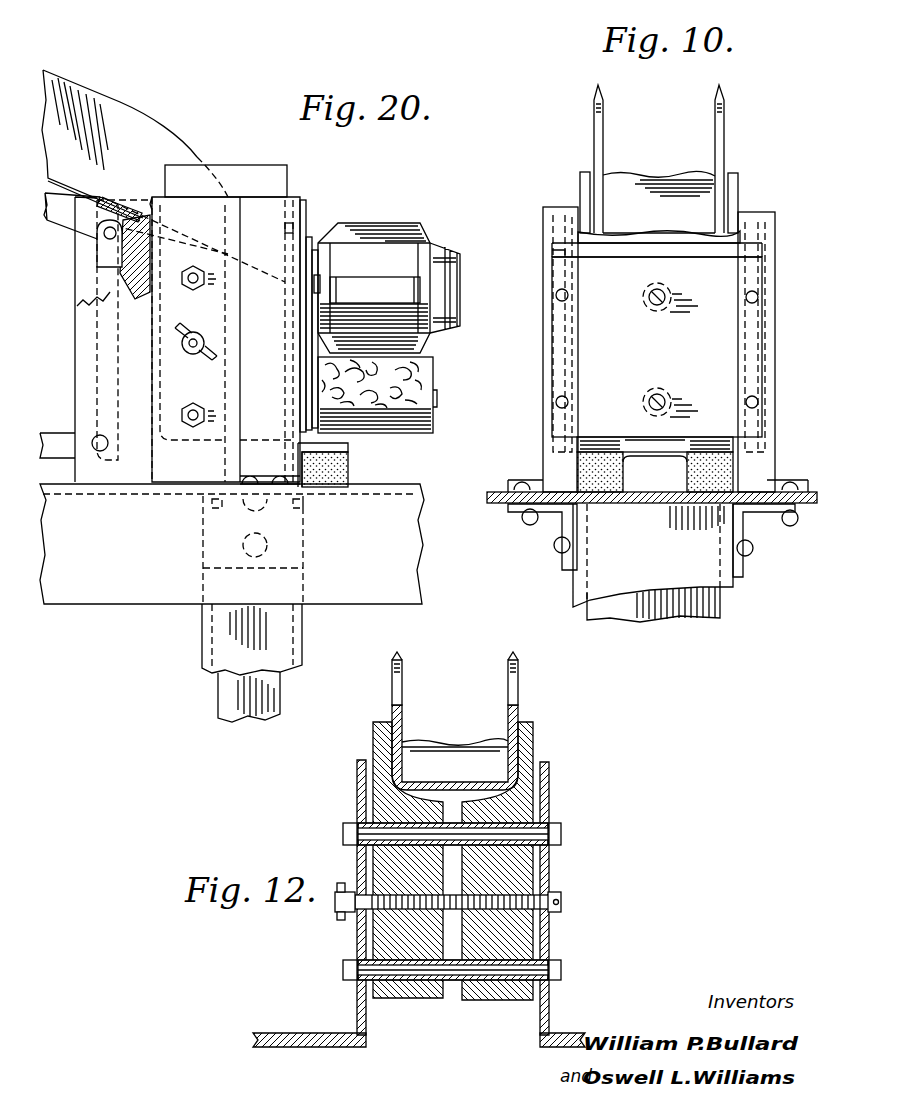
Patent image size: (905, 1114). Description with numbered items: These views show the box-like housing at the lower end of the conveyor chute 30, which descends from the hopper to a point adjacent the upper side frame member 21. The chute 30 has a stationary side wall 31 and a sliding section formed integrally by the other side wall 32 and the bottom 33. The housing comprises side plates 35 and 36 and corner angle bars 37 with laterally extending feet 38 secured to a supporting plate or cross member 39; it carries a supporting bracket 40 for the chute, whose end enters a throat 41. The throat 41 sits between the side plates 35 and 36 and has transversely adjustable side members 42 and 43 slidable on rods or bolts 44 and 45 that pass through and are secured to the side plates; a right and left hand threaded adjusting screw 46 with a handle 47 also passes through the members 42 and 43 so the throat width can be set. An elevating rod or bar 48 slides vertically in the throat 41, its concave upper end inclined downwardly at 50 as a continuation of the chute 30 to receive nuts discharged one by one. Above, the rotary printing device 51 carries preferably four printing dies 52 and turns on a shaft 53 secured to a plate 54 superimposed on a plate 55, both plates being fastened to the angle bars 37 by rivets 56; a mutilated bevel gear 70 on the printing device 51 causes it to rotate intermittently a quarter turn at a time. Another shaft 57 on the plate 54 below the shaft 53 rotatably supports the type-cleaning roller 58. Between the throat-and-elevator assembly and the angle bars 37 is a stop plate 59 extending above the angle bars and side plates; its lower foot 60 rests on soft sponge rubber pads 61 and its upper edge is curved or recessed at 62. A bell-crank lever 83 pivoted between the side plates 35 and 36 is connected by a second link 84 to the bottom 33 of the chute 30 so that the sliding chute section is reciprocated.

In FIG. 20, the upper side frame member 21 is at (130, 586).
In FIG. 20, the conveyor chute 30 is at (129, 105).
In FIG. 10, the conveyor chute 30 is at (731, 115).
In FIG. 12, the conveyor chute 30 is at (524, 700).
In FIG. 12, the stationary side wall 31 is at (518, 722).
In FIG. 12, the other side wall 32 is at (403, 716).
In FIG. 12, the bottom 33 is at (414, 782).
In FIG. 20, the side plate 35 is at (77, 358).
In FIG. 12, the side plate 35 is at (358, 778).
In FIG. 20, the side plate 36 is at (86, 296).
In FIG. 12, the side plate 36 is at (550, 782).
In FIG. 20, the corner angle bars 37 is at (306, 208).
In FIG. 10, the corner angle bars 37 is at (545, 214).
In FIG. 20, the flanges or feet 38 is at (270, 470).
In FIG. 10, the flanges or feet 38 is at (510, 480).
In FIG. 20, the supporting plate or cross member 39 is at (397, 494).
In FIG. 10, the supporting plate or cross member 39 is at (496, 506).
In FIG. 20, the supporting bracket 40 is at (92, 252).
In FIG. 20, the throat 41 is at (266, 160).
In FIG. 10, the throat 41 is at (613, 216).
In FIG. 12, the throat 41 is at (456, 794).
In FIG. 20, the adjustable side member 42 is at (192, 186).
In FIG. 10, the adjustable side member 42 is at (580, 187).
In FIG. 12, the adjustable side member 42 is at (385, 805).
In FIG. 10, the adjustable side member 43 is at (735, 232).
In FIG. 12, the adjustable side member 43 is at (520, 812).
In FIG. 20, the rod or bolt 44 is at (190, 296).
In FIG. 12, the rod or bolt 44 is at (561, 840).
In FIG. 20, the rod or bolt 45 is at (188, 426).
In FIG. 12, the rod or bolt 45 is at (562, 968).
In FIG. 12, the right and left hand threaded adjusting screw 46 is at (562, 900).
In FIG. 20, the handle 47 is at (182, 344).
In FIG. 12, the handle 47 is at (340, 921).
In FIG. 20, the elevating rod or bar 48 is at (218, 692).
In FIG. 10, the elevating rod or bar 48 is at (654, 612).
In FIG. 20, the inclined concave upper end 50 is at (225, 339).
In FIG. 20, the rotary printing device 51 is at (428, 344).
In FIG. 20, the marking or printing dies 52 is at (405, 280).
In FIG. 20, the shaft 53 is at (314, 286).
In FIG. 10, the shaft 53 is at (654, 306).
In FIG. 20, the plate 54 is at (312, 360).
In FIG. 10, the plate 54 is at (596, 350).
In FIG. 20, the plate 55 is at (306, 322).
In FIG. 10, the plate 55 is at (558, 251).
In FIG. 10, the rivets 56 is at (758, 298).
In FIG. 20, the shaft 57 is at (314, 395).
In FIG. 10, the shaft 57 is at (660, 392).
In FIG. 20, the type-cleaning roller 58 is at (433, 430).
In FIG. 20, the stop plate 59 is at (302, 242).
In FIG. 10, the stop plate 59 is at (728, 238).
In FIG. 20, the flange or foot 60 is at (350, 447).
In FIG. 10, the flange or foot 60 is at (698, 447).
In FIG. 20, the sponge rubber pads 61 is at (348, 473).
In FIG. 10, the sponge rubber pads 61 is at (700, 482).
In FIG. 20, the curved or recessed upper edge 62 is at (290, 200).
In FIG. 10, the curved or recessed upper edge 62 is at (657, 238).
In FIG. 20, the mutilated bevel gear 70 is at (452, 305).
In FIG. 20, the bell-crank lever 83 is at (58, 438).
In FIG. 20, the second link 84 is at (64, 222).